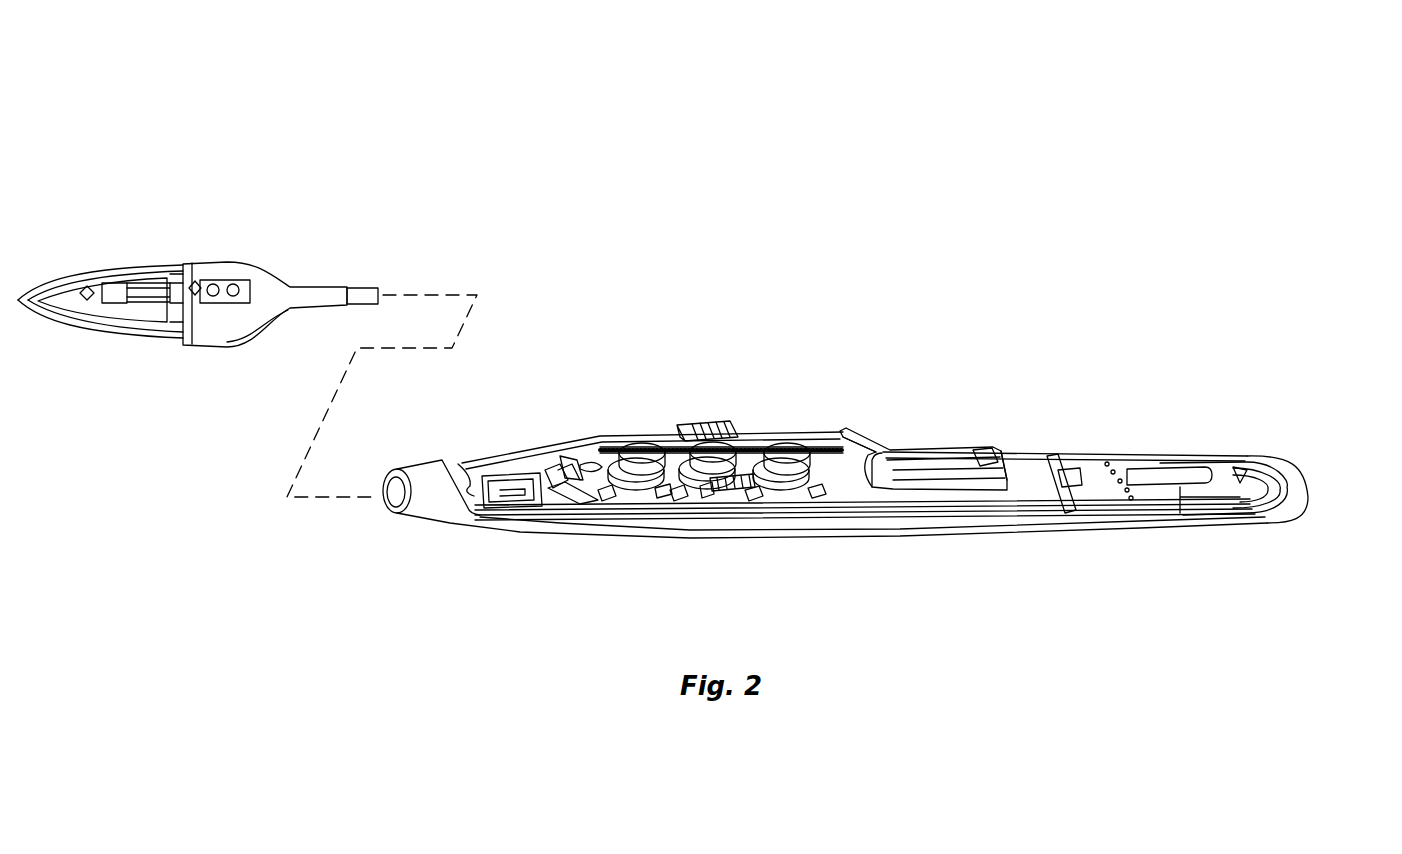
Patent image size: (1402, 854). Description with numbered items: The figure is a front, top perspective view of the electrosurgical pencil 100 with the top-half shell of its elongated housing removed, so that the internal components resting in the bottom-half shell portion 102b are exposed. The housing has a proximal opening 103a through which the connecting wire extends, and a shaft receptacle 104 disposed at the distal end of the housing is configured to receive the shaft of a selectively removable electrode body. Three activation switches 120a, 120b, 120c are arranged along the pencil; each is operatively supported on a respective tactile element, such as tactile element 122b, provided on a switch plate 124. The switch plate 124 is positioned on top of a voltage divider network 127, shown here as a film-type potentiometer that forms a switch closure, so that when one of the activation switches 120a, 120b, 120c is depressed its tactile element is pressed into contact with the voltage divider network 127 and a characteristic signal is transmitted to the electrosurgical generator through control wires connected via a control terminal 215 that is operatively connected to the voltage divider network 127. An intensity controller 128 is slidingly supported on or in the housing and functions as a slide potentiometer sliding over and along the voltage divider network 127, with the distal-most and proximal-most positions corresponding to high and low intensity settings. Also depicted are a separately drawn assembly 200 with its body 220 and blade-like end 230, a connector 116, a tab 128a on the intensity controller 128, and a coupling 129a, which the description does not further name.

The electrosurgical pencil 100 is at (959, 363).
The bottom-half shell portion 102b is at (953, 530).
The proximal opening 103a is at (1305, 482).
The shaft receptacle 104 is at (505, 490).
The connector 116 is at (362, 287).
The activation switch 120a is at (648, 453).
The activation switch 120b is at (716, 452).
The activation switch 120c is at (795, 453).
The tactile element 122b is at (614, 502).
The switch plate 124 is at (597, 462).
The voltage divider network 127 is at (1018, 477).
The intensity controller 128 is at (840, 411).
The bracket tab 128a is at (980, 452).
The knurled coupling 129a is at (722, 425).
The end effector assembly 200 is at (62, 203).
The control terminal 215 is at (1096, 468).
The end effector body 220 is at (262, 282).
The blade 230 is at (31, 318).